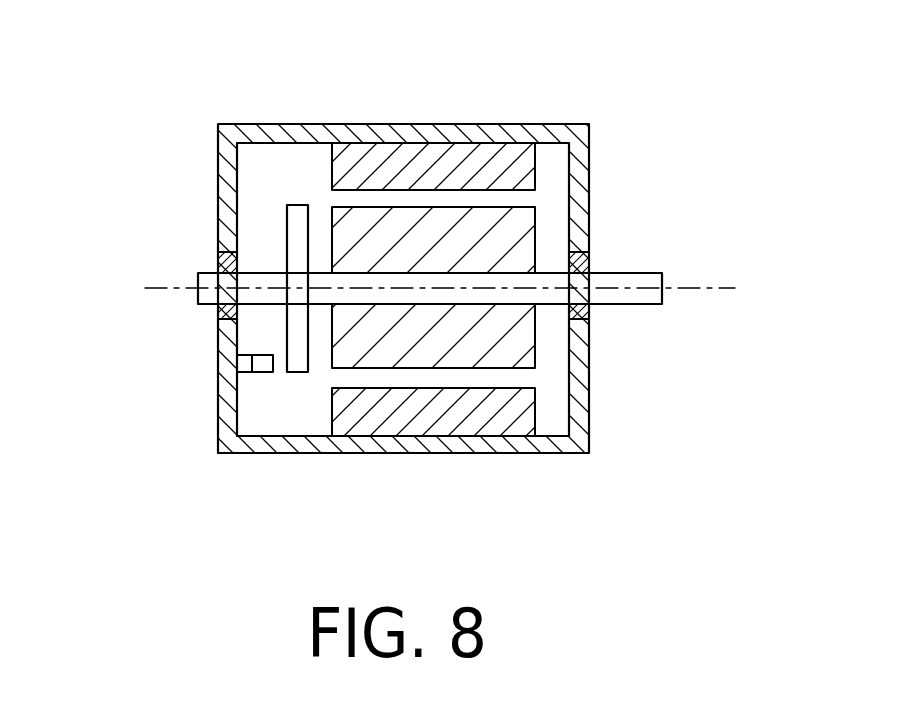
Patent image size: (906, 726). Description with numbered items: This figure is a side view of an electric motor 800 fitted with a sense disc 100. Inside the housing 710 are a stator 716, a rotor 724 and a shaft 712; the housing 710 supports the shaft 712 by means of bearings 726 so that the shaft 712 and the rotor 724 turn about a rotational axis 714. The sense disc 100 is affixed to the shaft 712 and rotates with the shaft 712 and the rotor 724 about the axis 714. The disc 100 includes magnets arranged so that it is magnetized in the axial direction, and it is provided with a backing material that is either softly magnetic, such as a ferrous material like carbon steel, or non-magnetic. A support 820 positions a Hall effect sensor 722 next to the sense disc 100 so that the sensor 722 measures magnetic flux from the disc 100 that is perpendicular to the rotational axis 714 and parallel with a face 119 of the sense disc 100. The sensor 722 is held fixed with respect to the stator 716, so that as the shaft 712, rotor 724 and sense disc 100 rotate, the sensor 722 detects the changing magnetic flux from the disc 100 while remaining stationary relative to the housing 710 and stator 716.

The motor 800 is at (195, 100).
The sense disc 100 is at (298, 217).
The face 119 is at (285, 334).
The housing 710 is at (507, 137).
The shaft 712 is at (610, 280).
The rotational axis 714 is at (703, 288).
The stator 716 is at (405, 152).
The Hall effect sensor 722 is at (258, 372).
The rotor 724 is at (523, 362).
The bearings 726 is at (218, 263).
The support 820 is at (237, 362).